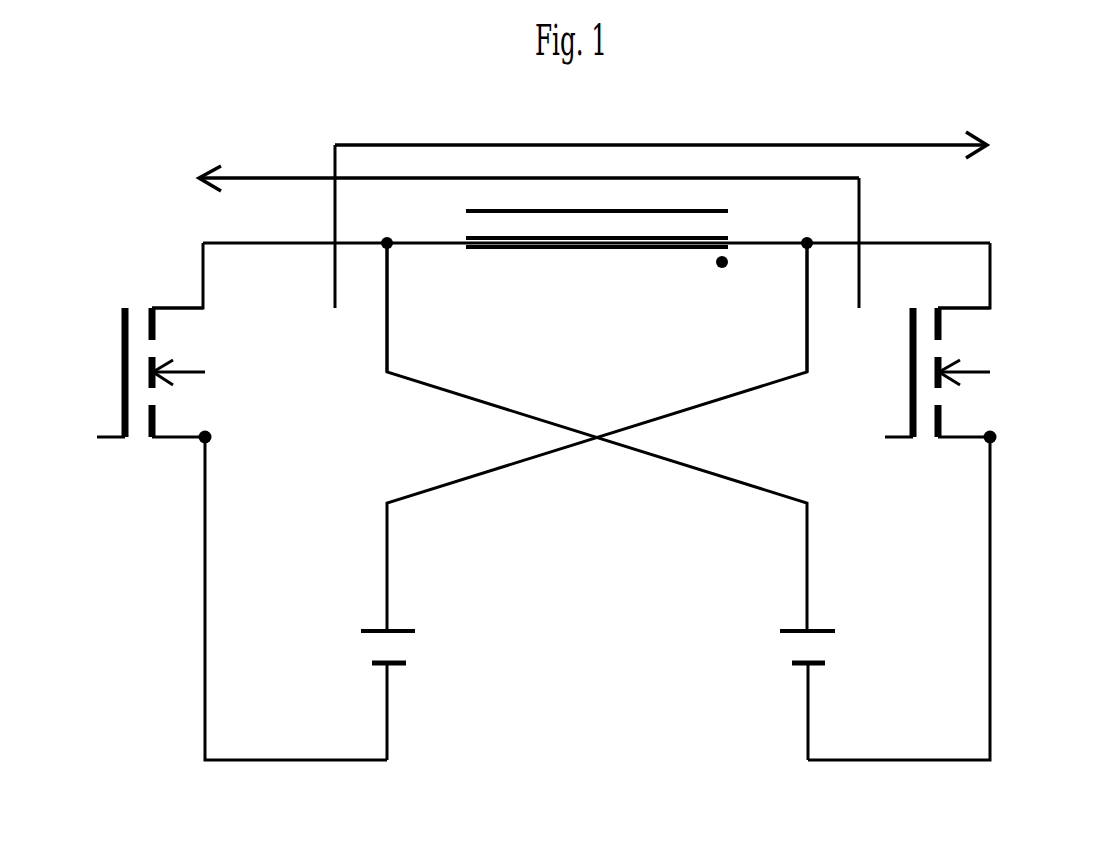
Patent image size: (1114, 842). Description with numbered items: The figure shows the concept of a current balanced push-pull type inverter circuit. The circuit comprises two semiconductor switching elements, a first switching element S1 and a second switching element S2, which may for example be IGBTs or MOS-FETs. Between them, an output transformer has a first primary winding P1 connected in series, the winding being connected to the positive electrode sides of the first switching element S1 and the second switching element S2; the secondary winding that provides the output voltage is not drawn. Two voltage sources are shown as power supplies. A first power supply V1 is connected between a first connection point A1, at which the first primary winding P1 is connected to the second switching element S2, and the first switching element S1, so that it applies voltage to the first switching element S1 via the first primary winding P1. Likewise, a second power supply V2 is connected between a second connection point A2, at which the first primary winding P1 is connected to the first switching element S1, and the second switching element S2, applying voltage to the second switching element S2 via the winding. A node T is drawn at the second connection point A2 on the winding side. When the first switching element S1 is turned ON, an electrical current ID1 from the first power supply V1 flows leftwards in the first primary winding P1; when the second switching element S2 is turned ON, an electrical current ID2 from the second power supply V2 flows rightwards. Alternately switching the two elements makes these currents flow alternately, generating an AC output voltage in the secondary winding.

The electrical current ID1 is at (511, 217).
The electrical current ID2 is at (696, 215).
The terminal node T is at (405, 219).
The first connection point A1 is at (779, 304).
The second connection point A2 is at (420, 307).
The first primary winding P1 is at (597, 259).
The first switching element S1 is at (194, 376).
The second switching element S2 is at (983, 376).
The first power supply V1 is at (422, 620).
The second power supply V2 is at (842, 620).